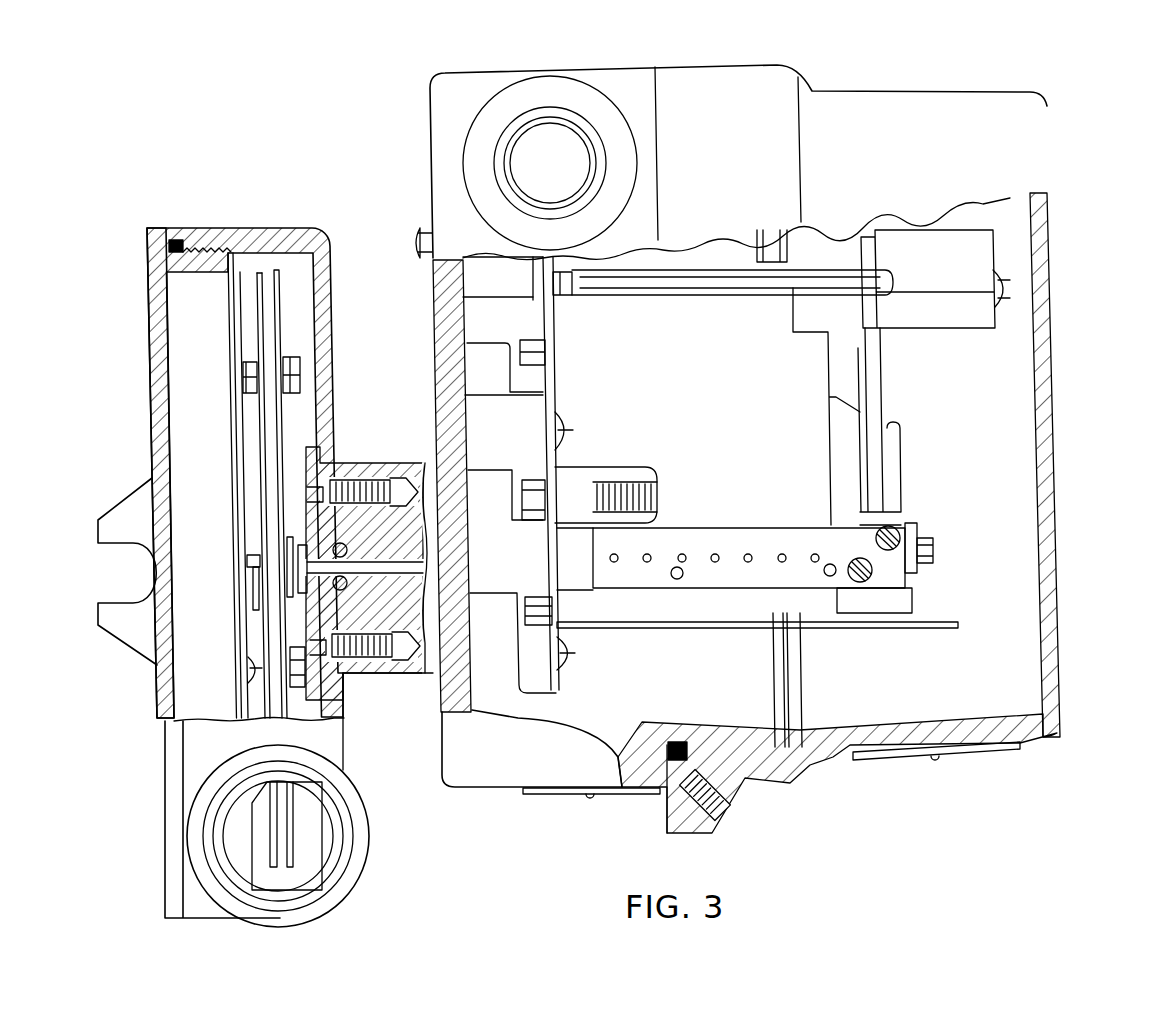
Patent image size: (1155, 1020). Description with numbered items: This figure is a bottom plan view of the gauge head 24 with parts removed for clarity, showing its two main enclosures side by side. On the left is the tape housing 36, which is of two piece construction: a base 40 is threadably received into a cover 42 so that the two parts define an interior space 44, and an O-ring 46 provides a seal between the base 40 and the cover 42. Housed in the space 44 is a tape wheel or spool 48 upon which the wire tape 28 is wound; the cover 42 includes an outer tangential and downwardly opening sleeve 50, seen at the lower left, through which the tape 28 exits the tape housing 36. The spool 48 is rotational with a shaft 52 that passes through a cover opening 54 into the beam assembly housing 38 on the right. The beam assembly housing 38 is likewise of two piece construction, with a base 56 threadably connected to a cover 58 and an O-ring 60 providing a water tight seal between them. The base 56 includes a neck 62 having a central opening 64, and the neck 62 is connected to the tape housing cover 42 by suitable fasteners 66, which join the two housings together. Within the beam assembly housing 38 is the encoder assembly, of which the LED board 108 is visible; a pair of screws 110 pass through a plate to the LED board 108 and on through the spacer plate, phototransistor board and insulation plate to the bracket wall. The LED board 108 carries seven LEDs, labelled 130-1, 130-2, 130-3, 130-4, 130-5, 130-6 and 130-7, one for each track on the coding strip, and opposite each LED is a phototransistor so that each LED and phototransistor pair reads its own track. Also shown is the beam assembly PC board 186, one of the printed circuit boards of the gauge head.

The gauge head 24 is at (1072, 567).
The wire tape 28 is at (267, 303).
The tape housing 36 is at (200, 431).
The beam assembly housing 38 is at (1047, 92).
The base 40 is at (155, 228).
The cover 42 is at (293, 228).
The interior space 44 is at (197, 330).
The O-ring 46 is at (179, 243).
The tape wheel or spool 48 is at (272, 272).
The sleeve 50 is at (360, 800).
The shaft 52 is at (933, 551).
The cover opening 54 is at (346, 465).
The base 56 is at (475, 786).
The cover 58 is at (988, 760).
The O-ring 60 is at (737, 794).
The neck 62 is at (362, 666).
The central opening 64 is at (403, 465).
The fasteners 66 is at (310, 480).
The LED board 108 is at (748, 528).
The screws 110 is at (873, 563).
The LED 130-1 is at (815, 563).
The LED 130-2 is at (782, 553).
The LED 130-3 is at (748, 563).
The LED 130-4 is at (715, 553).
The LED 130-5 is at (682, 563).
The LED 130-6 is at (647, 563).
The LED 130-7 is at (618, 556).
The beam assembly PC board 186 is at (940, 622).